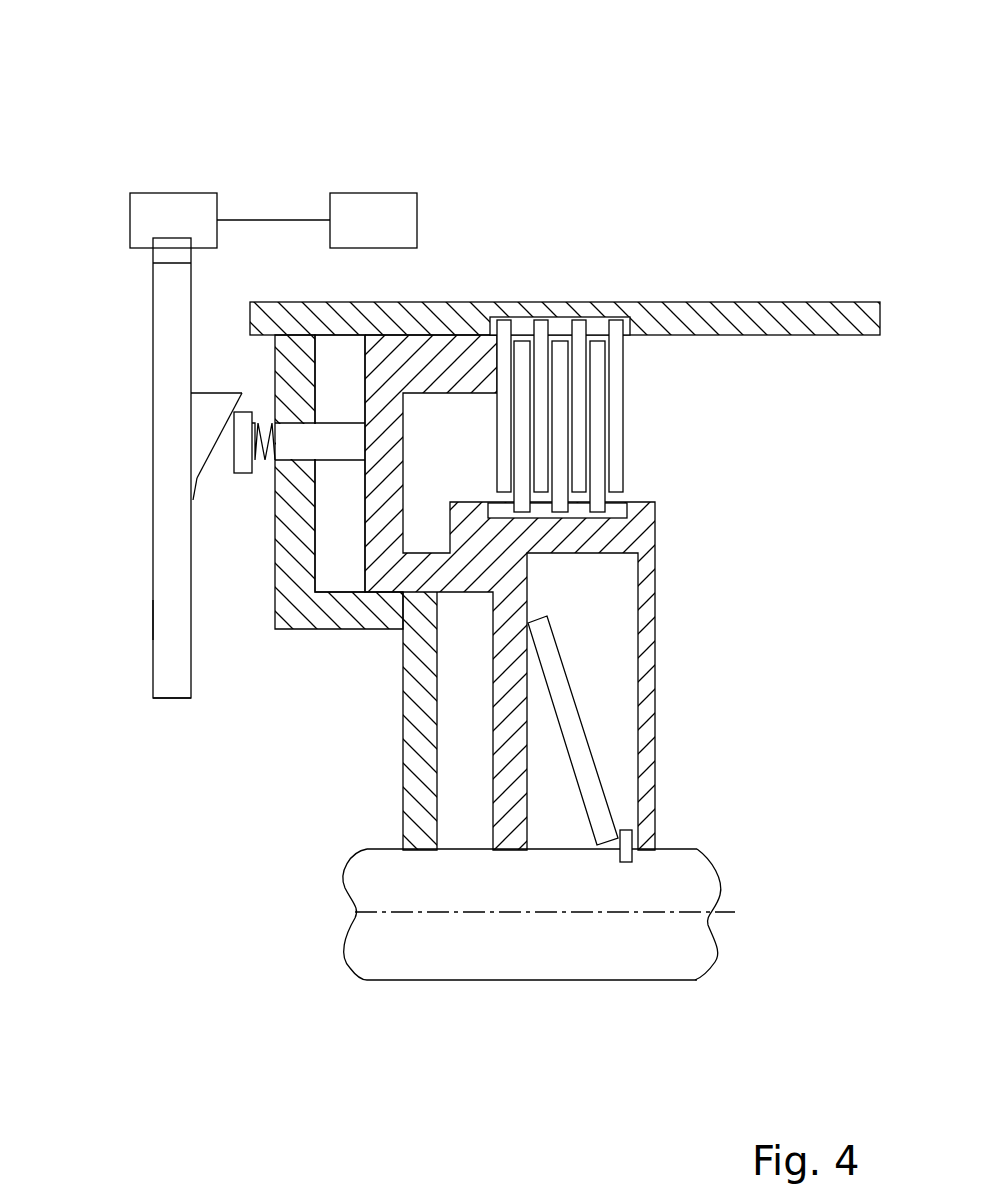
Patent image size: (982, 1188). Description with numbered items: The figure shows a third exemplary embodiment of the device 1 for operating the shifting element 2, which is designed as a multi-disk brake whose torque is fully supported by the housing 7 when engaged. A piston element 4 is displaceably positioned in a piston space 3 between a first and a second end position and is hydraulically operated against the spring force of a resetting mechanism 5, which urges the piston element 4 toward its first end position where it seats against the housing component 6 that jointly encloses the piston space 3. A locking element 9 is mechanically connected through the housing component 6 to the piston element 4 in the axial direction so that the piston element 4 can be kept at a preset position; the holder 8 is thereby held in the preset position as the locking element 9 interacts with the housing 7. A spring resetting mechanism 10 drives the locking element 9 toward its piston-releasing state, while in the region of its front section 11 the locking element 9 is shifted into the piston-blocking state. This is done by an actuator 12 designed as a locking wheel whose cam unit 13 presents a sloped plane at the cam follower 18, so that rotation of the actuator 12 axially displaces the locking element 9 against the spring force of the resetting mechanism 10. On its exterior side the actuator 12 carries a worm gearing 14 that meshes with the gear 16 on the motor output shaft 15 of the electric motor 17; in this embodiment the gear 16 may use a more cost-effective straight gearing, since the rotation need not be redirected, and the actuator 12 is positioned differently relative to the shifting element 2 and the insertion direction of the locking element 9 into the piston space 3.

The device 1 is at (126, 149).
The shifting element 2 is at (652, 384).
The piston space 3 is at (345, 556).
The piston element 4 is at (422, 345).
The resetting mechanism 5 is at (583, 716).
The housing component 6 is at (298, 607).
The housing 7 is at (740, 302).
The holder 8 is at (170, 716).
The locking element 9 is at (277, 421).
The spring resetting mechanism 10 is at (250, 475).
The front section 11 is at (233, 440).
The actuator 12 is at (155, 620).
The cam unit 13 is at (197, 476).
The worm gearing 14 is at (173, 253).
The motor output shaft 15 is at (262, 220).
The gear 16 is at (158, 212).
The electric motor 17 is at (380, 204).
The cam follower 18 is at (198, 400).